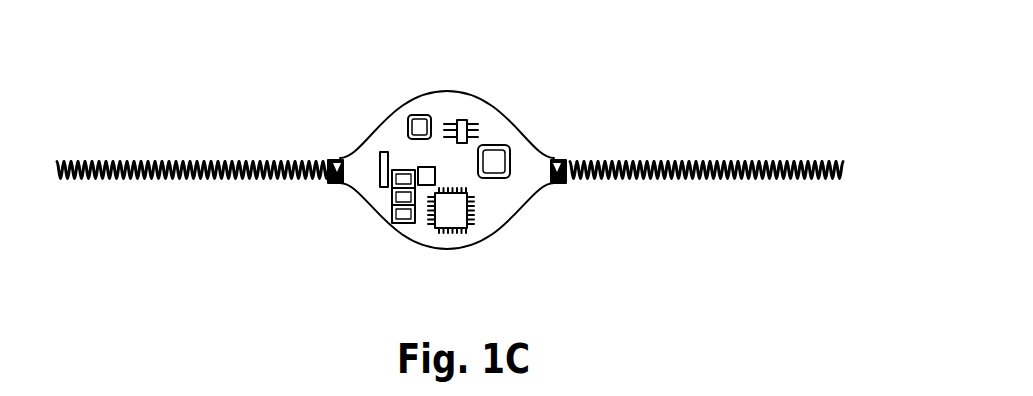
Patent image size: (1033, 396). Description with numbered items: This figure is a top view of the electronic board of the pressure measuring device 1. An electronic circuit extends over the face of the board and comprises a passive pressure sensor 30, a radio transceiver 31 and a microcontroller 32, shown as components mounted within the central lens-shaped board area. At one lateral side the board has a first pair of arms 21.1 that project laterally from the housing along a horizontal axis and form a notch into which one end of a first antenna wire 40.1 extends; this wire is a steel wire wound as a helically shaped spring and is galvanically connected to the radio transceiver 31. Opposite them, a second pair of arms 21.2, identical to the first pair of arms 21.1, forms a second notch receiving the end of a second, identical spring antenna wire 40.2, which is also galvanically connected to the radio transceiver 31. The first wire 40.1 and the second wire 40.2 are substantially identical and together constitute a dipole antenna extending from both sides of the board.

The electronic device / sensor assembly 1 is at (663, 80).
The first pair of arms 21.1 is at (562, 160).
The second pair of arms 21.2 is at (336, 160).
The passive pressure sensor 30 is at (420, 123).
The radio transceiver 31 is at (495, 150).
The microcontroller 32 is at (453, 223).
The first antenna wire 40.1 is at (788, 160).
The second antenna wire 40.2 is at (112, 160).